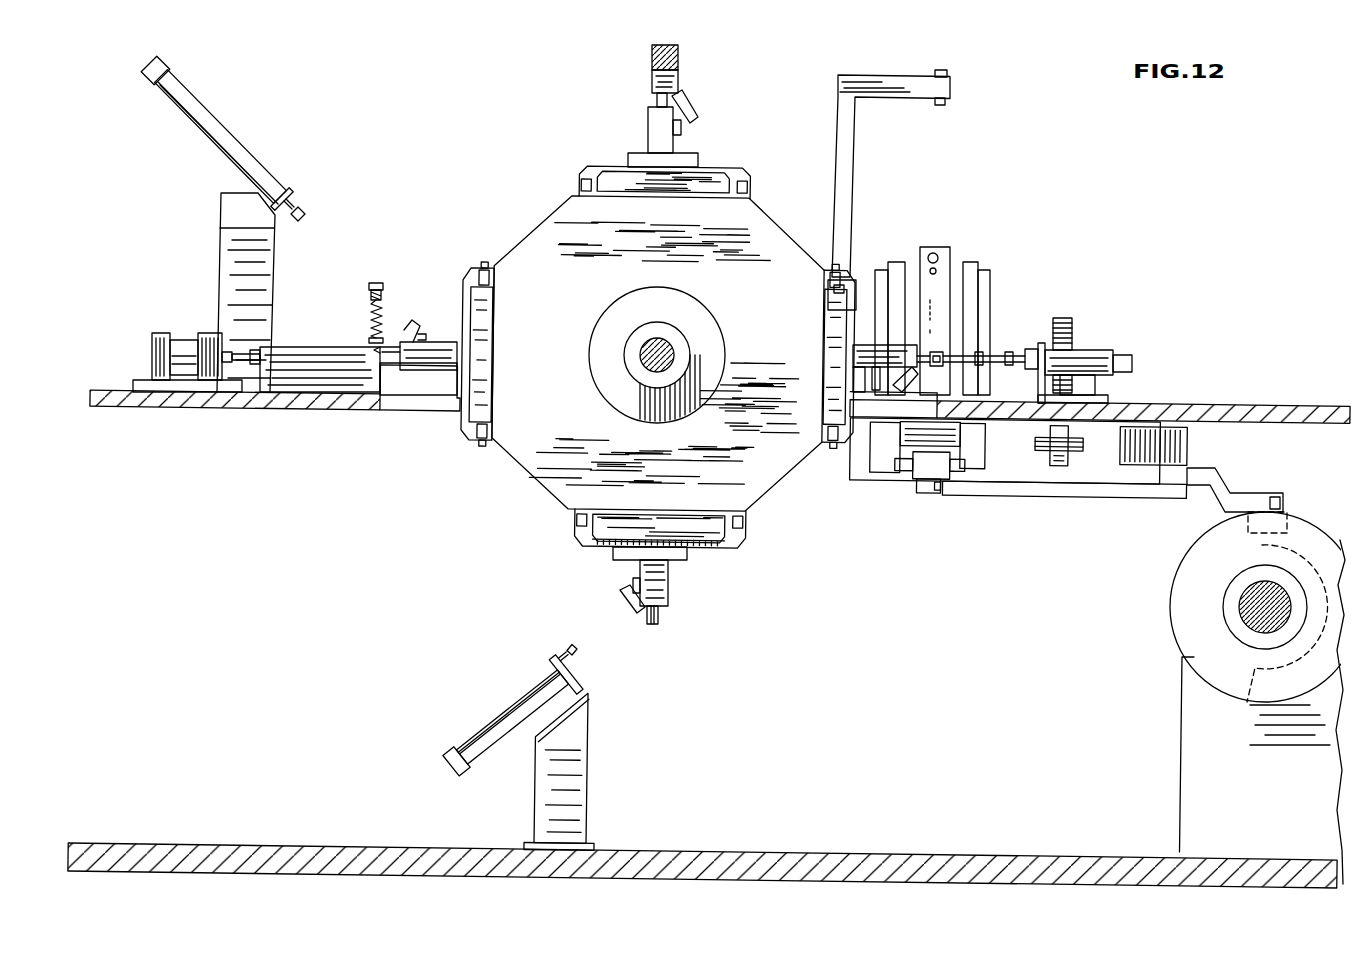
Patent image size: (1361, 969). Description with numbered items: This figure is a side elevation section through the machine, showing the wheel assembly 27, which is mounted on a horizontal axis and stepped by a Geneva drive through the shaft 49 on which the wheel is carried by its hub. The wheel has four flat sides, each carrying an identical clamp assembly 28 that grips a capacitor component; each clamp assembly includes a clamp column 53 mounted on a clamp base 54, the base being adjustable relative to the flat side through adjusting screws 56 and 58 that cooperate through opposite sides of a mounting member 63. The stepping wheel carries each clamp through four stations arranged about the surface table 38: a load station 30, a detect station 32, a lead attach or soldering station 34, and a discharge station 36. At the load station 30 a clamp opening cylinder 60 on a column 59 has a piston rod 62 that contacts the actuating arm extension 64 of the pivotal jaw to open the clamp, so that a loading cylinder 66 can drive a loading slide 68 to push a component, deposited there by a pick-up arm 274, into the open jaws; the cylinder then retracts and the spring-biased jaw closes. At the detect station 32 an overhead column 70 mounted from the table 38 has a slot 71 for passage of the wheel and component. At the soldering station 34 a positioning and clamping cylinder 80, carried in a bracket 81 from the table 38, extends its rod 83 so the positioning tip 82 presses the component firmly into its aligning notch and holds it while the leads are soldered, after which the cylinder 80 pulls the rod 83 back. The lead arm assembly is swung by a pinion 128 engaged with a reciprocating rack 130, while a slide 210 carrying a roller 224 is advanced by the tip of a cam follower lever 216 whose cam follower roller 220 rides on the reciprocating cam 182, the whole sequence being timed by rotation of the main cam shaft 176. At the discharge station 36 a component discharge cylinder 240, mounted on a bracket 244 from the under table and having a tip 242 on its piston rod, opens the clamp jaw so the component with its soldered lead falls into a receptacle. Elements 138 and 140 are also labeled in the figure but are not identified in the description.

The wheel assembly 27 is at (806, 232).
The clamp assembly 28 is at (927, 346).
The load station 30 is at (364, 331).
The detect station 32 is at (700, 116).
The lead attach or soldering station 34 is at (935, 338).
The discharge station 36 is at (680, 622).
The surface table 38 is at (1222, 410).
The shaft 49 is at (648, 358).
The clamp column 53 is at (428, 366).
The clamp base 54 is at (462, 430).
The adjusting screw 56 is at (484, 446).
The adjusting screw 58 is at (485, 263).
The column 59 is at (222, 240).
The clamp opening cylinder 60 is at (268, 181).
The piston rod 62 is at (306, 211).
The mounting member 63 is at (485, 350).
The actuating arm extension 64 is at (410, 328).
The loading cylinder 66 is at (186, 345).
The loading slide 68 is at (298, 346).
The overhead column 70 is at (678, 62).
The slot 71 is at (652, 79).
The positioning and clamping cylinder 80 is at (1097, 352).
The bracket 81 is at (1108, 397).
The positioning tip 82 is at (946, 352).
The rod 83 is at (1019, 352).
The pinion 128 is at (1070, 326).
The rack 130 is at (1058, 458).
The plate 138 is at (947, 262).
The arm 140 is at (854, 188).
The main cam shaft 176 is at (1256, 614).
The reciprocating cam 182 is at (1172, 573).
The slide 210 is at (918, 468).
The cam follower lever 216 is at (1102, 498).
The cam follower roller 220 is at (1246, 527).
The roller 224 is at (926, 498).
The component discharge cylinder 240 is at (518, 698).
The tip 242 is at (588, 780).
The bracket 244 is at (571, 646).
The pick-up arm 274 is at (368, 293).